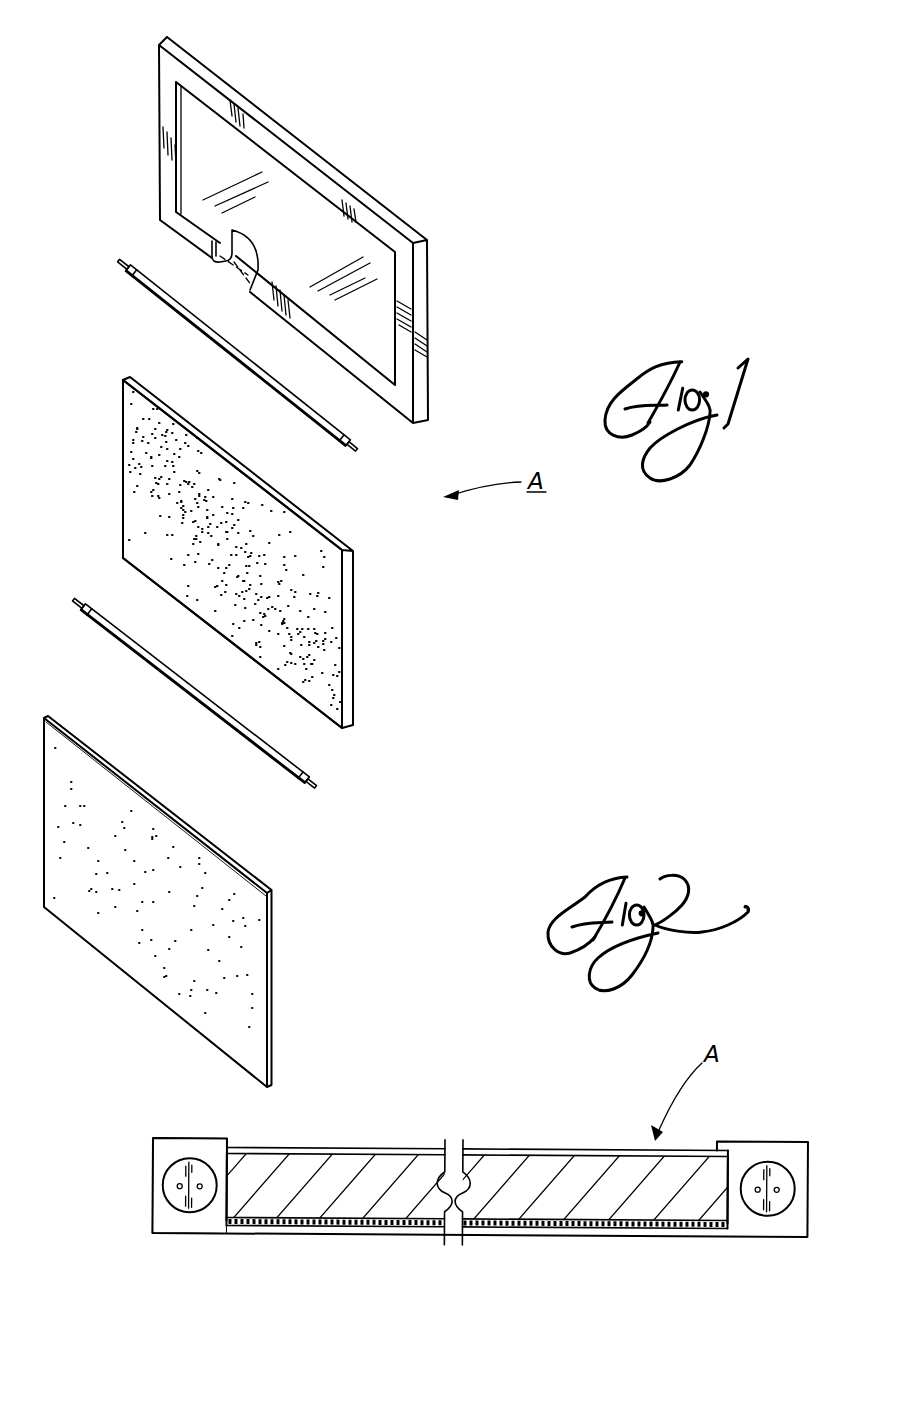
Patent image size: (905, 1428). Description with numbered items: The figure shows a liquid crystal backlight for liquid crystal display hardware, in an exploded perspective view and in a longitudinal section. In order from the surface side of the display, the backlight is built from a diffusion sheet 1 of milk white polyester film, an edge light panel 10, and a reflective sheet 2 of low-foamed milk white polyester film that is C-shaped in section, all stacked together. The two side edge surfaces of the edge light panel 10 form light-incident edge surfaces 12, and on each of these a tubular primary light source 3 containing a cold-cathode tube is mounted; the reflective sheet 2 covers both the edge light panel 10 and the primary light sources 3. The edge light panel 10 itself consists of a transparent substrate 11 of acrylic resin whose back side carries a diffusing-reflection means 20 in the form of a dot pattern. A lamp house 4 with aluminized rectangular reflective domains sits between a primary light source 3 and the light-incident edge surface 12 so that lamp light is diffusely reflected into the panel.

In FIG. 1, the diffusion sheet 1 is at (270, 1008).
In FIG. 2, the diffusion sheet 1 is at (363, 1148).
In FIG. 1, the reflective sheet 2 is at (389, 212).
In FIG. 2, the reflective sheet 2 is at (565, 1236).
In FIG. 1, the primary light source 3 is at (316, 428).
In FIG. 2, the primary light source 3 is at (173, 1210).
In FIG. 2, the lamp house 4 is at (195, 1222).
In FIG. 1, the edge light panel 10 is at (338, 748).
In FIG. 2, the edge light panel 10 is at (688, 1253).
In FIG. 1, the transparent substrate 11 is at (333, 659).
In FIG. 1, the light-incident edge surface 12 is at (151, 392).
In FIG. 2, the light-incident edge surface 12 is at (228, 1221).
In FIG. 1, the diffusing-reflection means 20 is at (140, 486).
In FIG. 2, the diffusing-reflection means 20 is at (377, 1227).